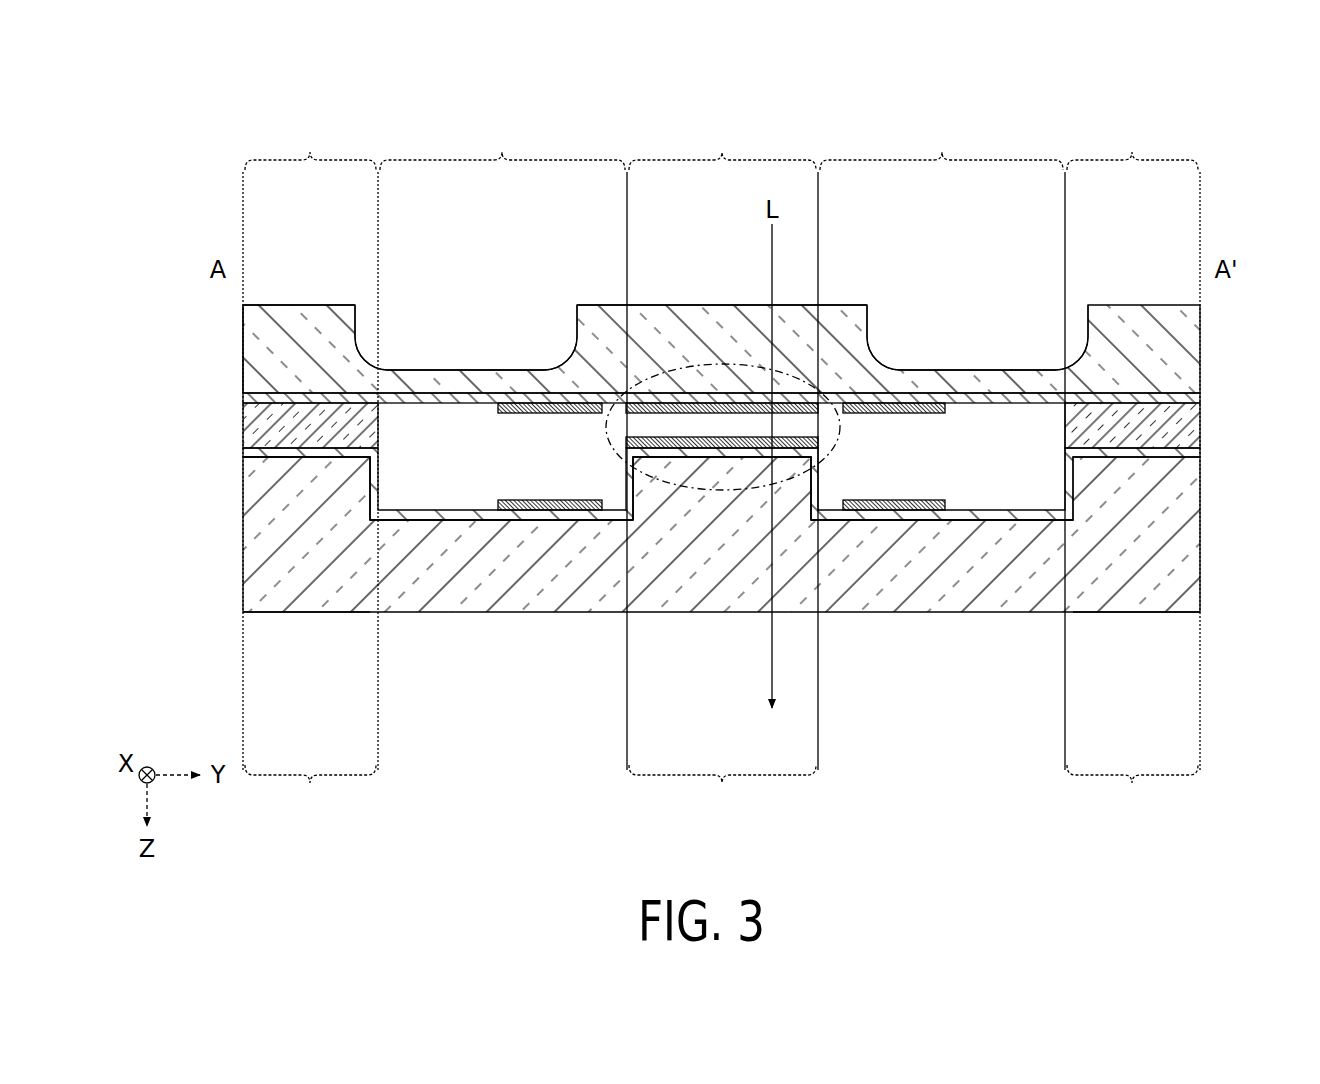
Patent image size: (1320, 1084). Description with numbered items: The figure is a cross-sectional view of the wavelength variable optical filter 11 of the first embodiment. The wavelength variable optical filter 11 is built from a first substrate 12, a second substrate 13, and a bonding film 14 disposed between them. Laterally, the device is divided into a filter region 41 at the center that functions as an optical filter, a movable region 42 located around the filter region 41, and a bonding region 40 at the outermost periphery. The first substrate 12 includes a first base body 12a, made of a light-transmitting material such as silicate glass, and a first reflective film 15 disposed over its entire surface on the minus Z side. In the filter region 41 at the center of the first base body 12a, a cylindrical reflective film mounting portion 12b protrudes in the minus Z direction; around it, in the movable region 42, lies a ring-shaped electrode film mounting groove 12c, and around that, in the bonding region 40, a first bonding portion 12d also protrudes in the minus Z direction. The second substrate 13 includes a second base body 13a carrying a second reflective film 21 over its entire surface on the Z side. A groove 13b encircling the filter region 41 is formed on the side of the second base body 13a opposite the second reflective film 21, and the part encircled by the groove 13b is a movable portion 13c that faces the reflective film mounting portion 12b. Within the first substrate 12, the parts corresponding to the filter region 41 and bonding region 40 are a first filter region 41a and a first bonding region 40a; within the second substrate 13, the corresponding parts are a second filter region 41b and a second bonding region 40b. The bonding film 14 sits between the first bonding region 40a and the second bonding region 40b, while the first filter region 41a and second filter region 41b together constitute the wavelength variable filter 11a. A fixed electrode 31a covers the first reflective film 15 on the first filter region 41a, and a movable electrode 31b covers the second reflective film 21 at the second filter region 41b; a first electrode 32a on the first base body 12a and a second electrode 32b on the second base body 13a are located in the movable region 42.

The wavelength variable optical filter 11 is at (1270, 114).
The wavelength variable filter 11a is at (747, 360).
The first substrate 12 is at (145, 452).
The first base body 12a is at (243, 525).
The reflective film mounting portion 12b is at (733, 540).
The electrode film mounting groove 12c is at (472, 504).
The first bonding portion 12d is at (300, 482).
The second substrate 13 is at (145, 307).
The second base body 13a is at (243, 346).
The groove 13b is at (356, 332).
The movable portion 13c is at (688, 312).
The bonding film 14 is at (243, 427).
The first reflective film 15 is at (243, 453).
The second reflective film 21 is at (243, 398).
The fixed electrode 31a is at (818, 441).
The movable electrode 31b is at (717, 414).
The first electrode 32a is at (515, 500).
The second electrode 32b is at (512, 413).
The bonding region 40 is at (725, 470).
The first bonding region 40a is at (725, 791).
The second bonding region 40b is at (725, 146).
The filter region 41 is at (722, 470).
The first filter region 41a is at (722, 791).
The second filter region 41b is at (722, 146).
The movable region 42 is at (721, 146).